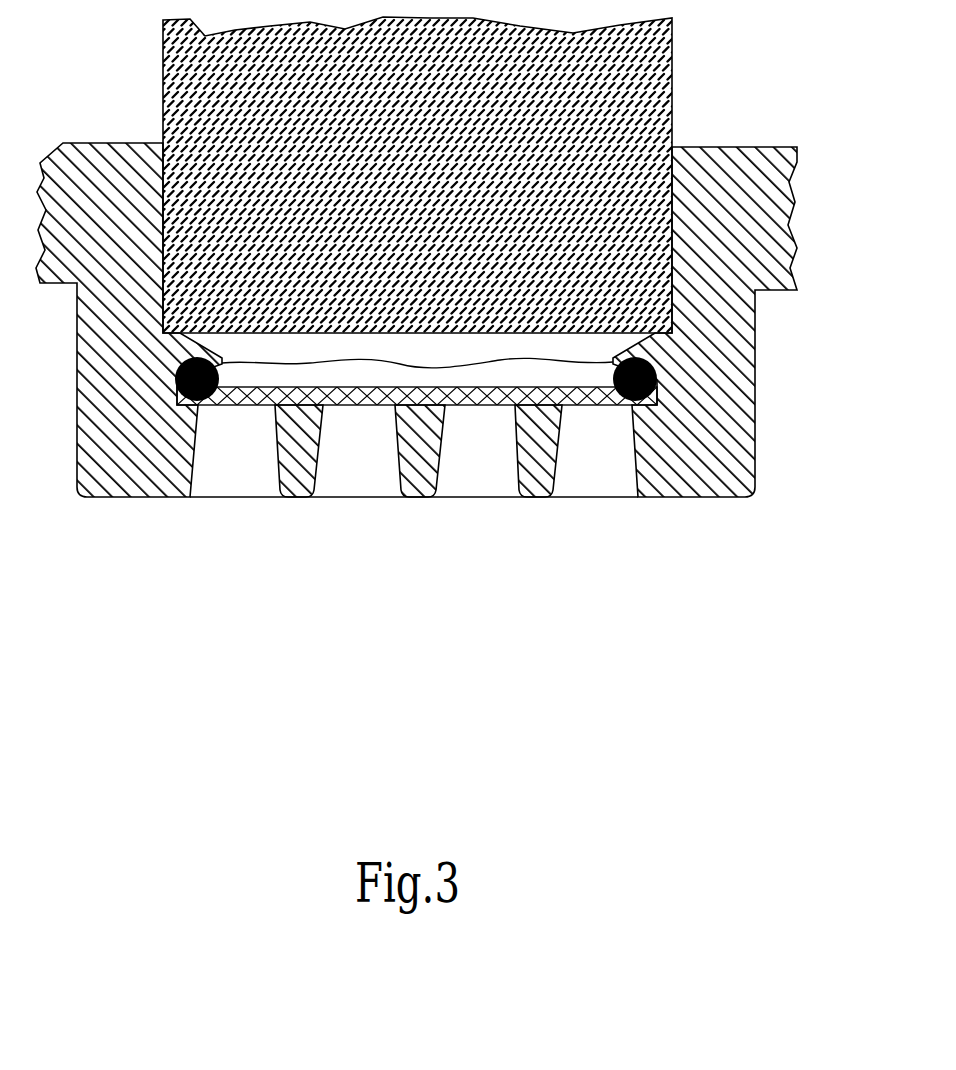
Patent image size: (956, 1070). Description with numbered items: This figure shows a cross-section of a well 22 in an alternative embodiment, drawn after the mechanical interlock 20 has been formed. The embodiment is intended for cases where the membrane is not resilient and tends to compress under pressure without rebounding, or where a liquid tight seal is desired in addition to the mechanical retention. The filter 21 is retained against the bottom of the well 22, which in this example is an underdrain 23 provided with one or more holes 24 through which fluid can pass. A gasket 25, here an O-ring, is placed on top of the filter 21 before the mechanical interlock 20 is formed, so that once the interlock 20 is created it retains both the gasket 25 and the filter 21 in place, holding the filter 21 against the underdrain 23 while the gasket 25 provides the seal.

The mechanical interlock 20 is at (643, 353).
The filter 21 is at (592, 410).
The well 22 is at (365, 348).
The underdrain 23 is at (297, 496).
The holes 24 is at (240, 405).
The gasket 25 is at (660, 380).